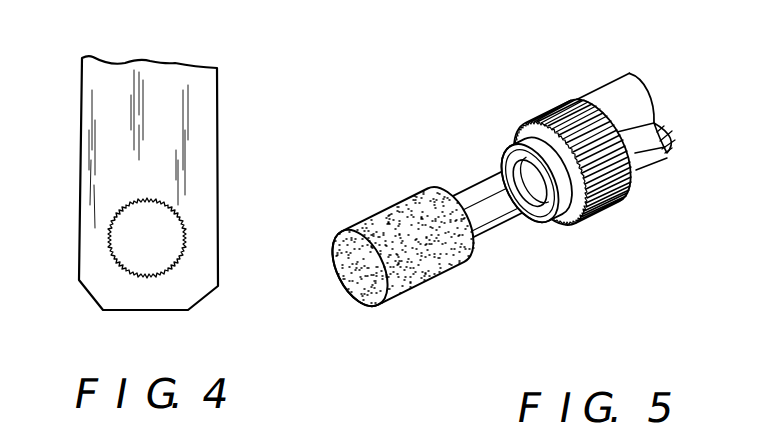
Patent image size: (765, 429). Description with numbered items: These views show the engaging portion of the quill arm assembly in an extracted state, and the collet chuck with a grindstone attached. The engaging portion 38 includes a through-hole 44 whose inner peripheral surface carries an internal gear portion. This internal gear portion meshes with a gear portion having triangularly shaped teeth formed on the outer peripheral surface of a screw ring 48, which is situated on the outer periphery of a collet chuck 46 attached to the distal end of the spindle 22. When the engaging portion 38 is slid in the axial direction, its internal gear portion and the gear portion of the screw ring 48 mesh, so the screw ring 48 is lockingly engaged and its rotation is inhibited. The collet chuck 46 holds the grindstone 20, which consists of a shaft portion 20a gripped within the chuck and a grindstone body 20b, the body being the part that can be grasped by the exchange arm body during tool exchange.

In FIG. 4, the engaging portion 38 is at (197, 141).
In FIG. 4, the through-hole 44 is at (157, 250).
In FIG. 5, the grindstone 20 is at (433, 243).
In FIG. 5, the shaft portion 20a is at (475, 192).
In FIG. 5, the grindstone body 20b is at (398, 222).
In FIG. 5, the collet chuck 46 is at (545, 108).
In FIG. 5, the screw ring 48 is at (595, 217).
In FIG. 5, the spindle 22 is at (643, 150).